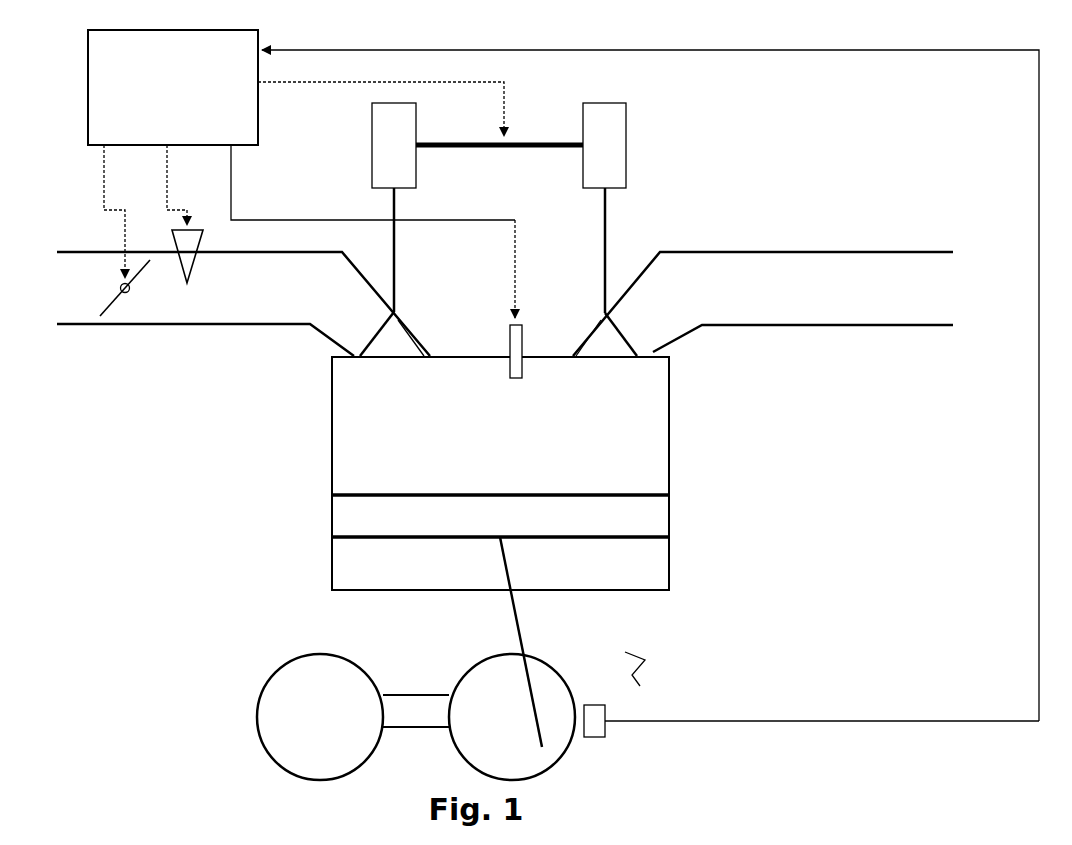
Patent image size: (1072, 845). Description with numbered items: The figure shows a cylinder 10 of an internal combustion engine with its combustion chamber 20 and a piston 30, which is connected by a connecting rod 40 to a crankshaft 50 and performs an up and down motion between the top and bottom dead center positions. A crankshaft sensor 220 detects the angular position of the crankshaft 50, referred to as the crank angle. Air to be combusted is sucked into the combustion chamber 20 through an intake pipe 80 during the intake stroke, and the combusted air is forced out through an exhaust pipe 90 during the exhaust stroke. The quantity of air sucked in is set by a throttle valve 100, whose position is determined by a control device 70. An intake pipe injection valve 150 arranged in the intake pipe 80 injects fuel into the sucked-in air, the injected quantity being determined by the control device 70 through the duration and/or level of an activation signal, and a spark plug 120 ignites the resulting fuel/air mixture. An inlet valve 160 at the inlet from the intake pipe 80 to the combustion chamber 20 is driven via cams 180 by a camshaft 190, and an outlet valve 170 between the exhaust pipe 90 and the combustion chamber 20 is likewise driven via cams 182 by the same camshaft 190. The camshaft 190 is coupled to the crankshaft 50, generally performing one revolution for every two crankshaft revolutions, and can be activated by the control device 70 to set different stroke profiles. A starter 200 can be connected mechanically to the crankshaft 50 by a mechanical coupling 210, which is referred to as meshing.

The cylinder 10 is at (300, 441).
The combustion chamber 20 is at (500, 473).
The piston 30 is at (658, 539).
The connecting rod 40 is at (525, 617).
The crankshaft 50 is at (512, 717).
The control device 70 is at (563, 375).
The intake pipe 80 is at (197, 262).
The exhaust pipe 90 is at (763, 304).
The throttle valve 100 is at (108, 318).
The spark plug 120 is at (534, 316).
The intake pipe injection valve 150 is at (219, 237).
The inlet valve 160 is at (372, 336).
The outlet valve 170 is at (612, 337).
The cams 180 is at (360, 143).
The cams 182 is at (640, 141).
The camshaft 190 is at (522, 159).
The starter 200 is at (320, 717).
The mechanical coupling 210 is at (405, 693).
The crankshaft sensor 220 is at (618, 736).